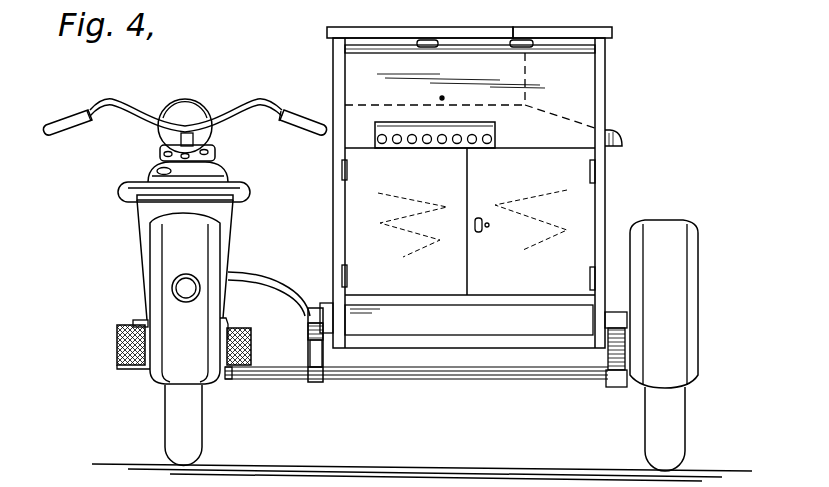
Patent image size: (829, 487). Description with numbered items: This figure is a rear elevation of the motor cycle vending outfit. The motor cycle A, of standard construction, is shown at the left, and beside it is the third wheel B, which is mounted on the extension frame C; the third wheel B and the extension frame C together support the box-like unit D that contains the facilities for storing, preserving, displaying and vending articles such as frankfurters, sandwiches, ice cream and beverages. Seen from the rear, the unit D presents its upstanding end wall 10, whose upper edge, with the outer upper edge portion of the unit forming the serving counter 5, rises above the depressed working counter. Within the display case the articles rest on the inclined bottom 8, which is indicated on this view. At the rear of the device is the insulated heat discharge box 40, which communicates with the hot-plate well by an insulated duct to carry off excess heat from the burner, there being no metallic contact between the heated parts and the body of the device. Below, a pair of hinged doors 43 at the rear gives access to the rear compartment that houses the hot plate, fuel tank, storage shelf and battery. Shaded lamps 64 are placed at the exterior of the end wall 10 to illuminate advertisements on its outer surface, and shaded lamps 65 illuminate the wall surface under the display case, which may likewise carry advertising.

The motor cycle A is at (138, 262).
The third wheel B is at (668, 420).
The extension frame C is at (310, 348).
The box-like unit D is at (610, 97).
The serving counter 5 is at (578, 28).
The inclined bottom 8 is at (557, 108).
The end wall 10 is at (468, 12).
The heat discharge box 40 is at (420, 134).
The hinged doors 43 is at (437, 285).
The shaded lamps 64 is at (593, 58).
The shaded lamps 65 is at (622, 138).